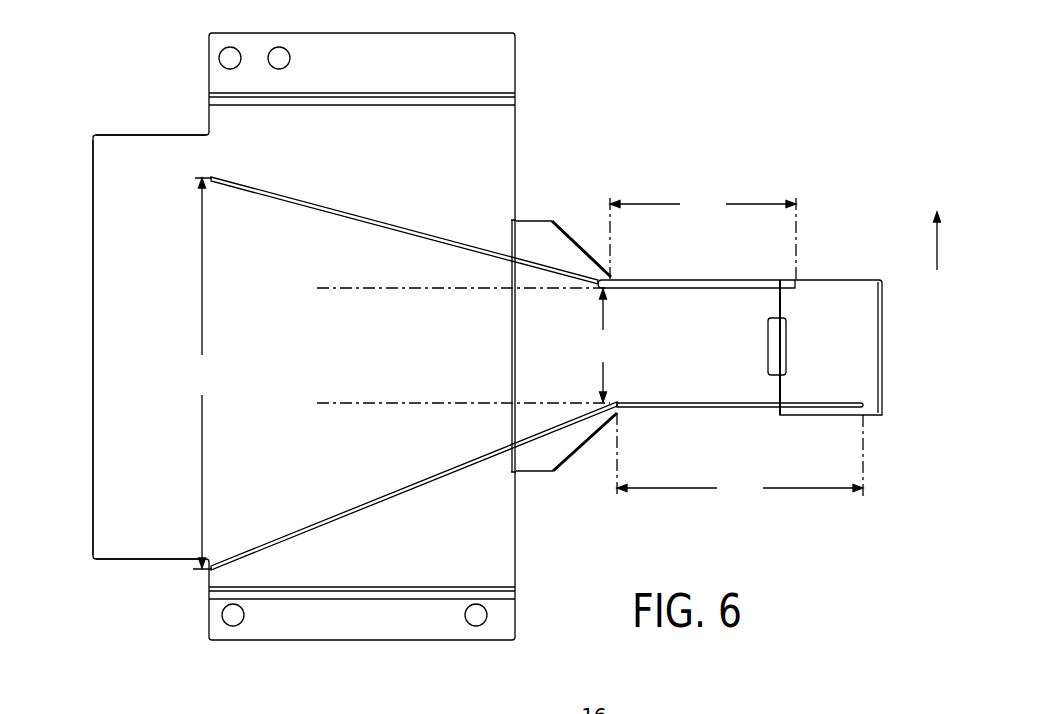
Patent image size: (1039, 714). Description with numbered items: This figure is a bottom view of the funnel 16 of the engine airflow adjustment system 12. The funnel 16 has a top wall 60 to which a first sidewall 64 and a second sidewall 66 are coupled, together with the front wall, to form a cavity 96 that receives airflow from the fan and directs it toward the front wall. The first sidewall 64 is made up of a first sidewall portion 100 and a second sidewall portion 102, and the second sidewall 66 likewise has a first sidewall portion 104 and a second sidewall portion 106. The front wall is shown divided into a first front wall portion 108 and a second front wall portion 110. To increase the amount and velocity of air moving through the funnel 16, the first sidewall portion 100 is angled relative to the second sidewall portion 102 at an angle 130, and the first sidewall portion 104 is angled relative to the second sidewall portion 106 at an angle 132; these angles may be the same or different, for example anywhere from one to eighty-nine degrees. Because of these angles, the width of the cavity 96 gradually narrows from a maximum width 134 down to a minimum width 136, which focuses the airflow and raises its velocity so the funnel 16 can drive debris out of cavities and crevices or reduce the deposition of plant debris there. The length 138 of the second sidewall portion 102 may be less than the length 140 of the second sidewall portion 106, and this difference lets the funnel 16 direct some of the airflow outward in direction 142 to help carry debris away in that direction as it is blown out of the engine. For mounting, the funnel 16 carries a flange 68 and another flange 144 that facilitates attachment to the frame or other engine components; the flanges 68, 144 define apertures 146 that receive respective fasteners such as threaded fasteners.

The engine airflow adjustment system 12 is at (138, 682).
The funnel 16 is at (777, 138).
The top wall 60 is at (107, 288).
The first sidewall 64 is at (583, 223).
The second sidewall 66 is at (596, 514).
The flange 68 is at (497, 62).
The cavity 96 is at (265, 355).
The first sidewall portion 100 is at (392, 226).
The second sidewall portion 102 is at (693, 281).
The first sidewall portion 104 is at (377, 503).
The second sidewall portion 106 is at (688, 408).
The first front wall portion 108 is at (640, 312).
The second front wall portion 110 is at (830, 295).
The angle 130 is at (490, 288).
The angle 132 is at (488, 403).
The maximum width 134 is at (200, 373).
The minimum width 136 is at (603, 345).
The length 138 is at (703, 235).
The length 140 is at (740, 458).
The direction 142 is at (937, 262).
The flange 144 is at (353, 614).
The apertures 146 is at (279, 53).